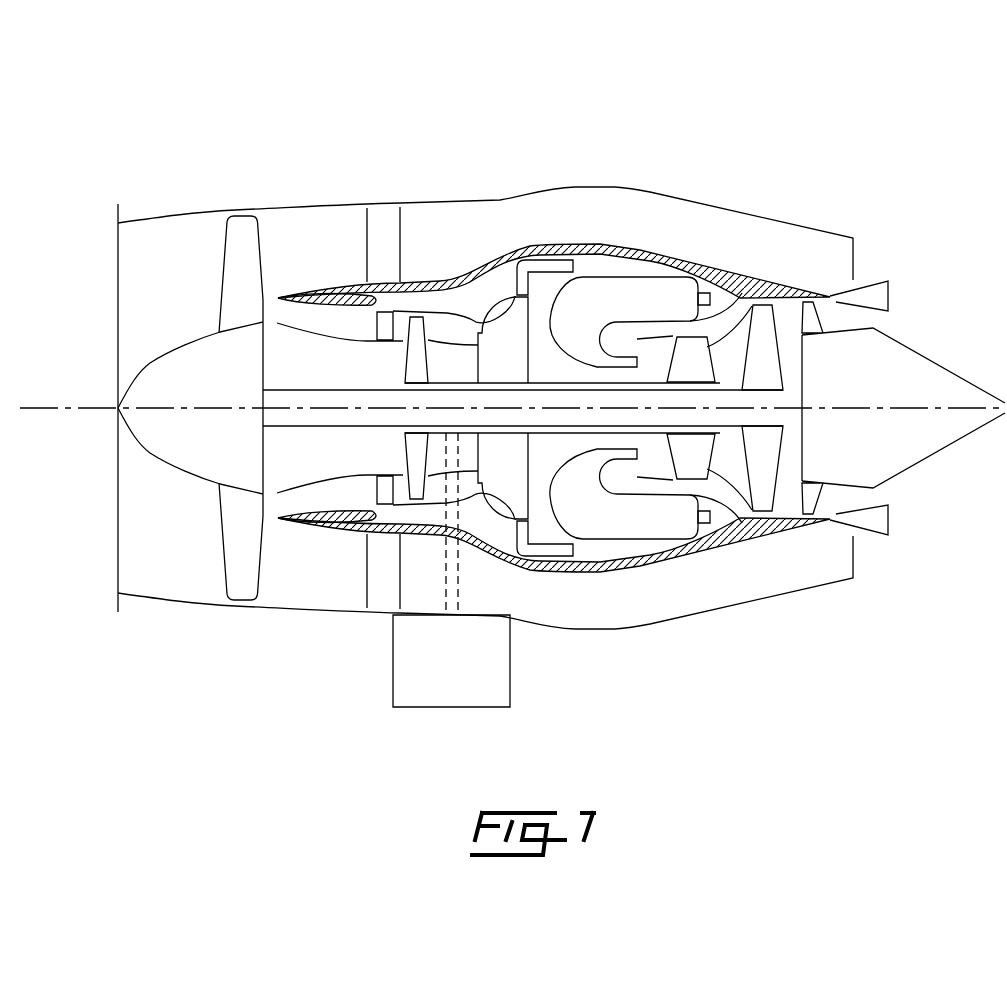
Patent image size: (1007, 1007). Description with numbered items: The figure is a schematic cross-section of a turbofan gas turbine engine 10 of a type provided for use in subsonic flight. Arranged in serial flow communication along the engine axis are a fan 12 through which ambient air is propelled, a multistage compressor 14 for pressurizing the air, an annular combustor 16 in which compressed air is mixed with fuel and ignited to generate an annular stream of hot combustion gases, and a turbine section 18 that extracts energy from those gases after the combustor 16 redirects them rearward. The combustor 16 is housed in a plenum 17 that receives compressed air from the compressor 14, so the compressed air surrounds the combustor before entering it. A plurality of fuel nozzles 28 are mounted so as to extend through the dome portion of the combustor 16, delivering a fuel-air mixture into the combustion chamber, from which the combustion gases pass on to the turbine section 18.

The gas turbine engine 10 is at (752, 148).
The fan 12 is at (237, 533).
The multistage compressor 14 is at (443, 327).
The annular combustor 16 is at (609, 300).
The plenum 17 is at (645, 250).
The turbine section 18 is at (727, 445).
The fuel nozzle 28 is at (722, 294).